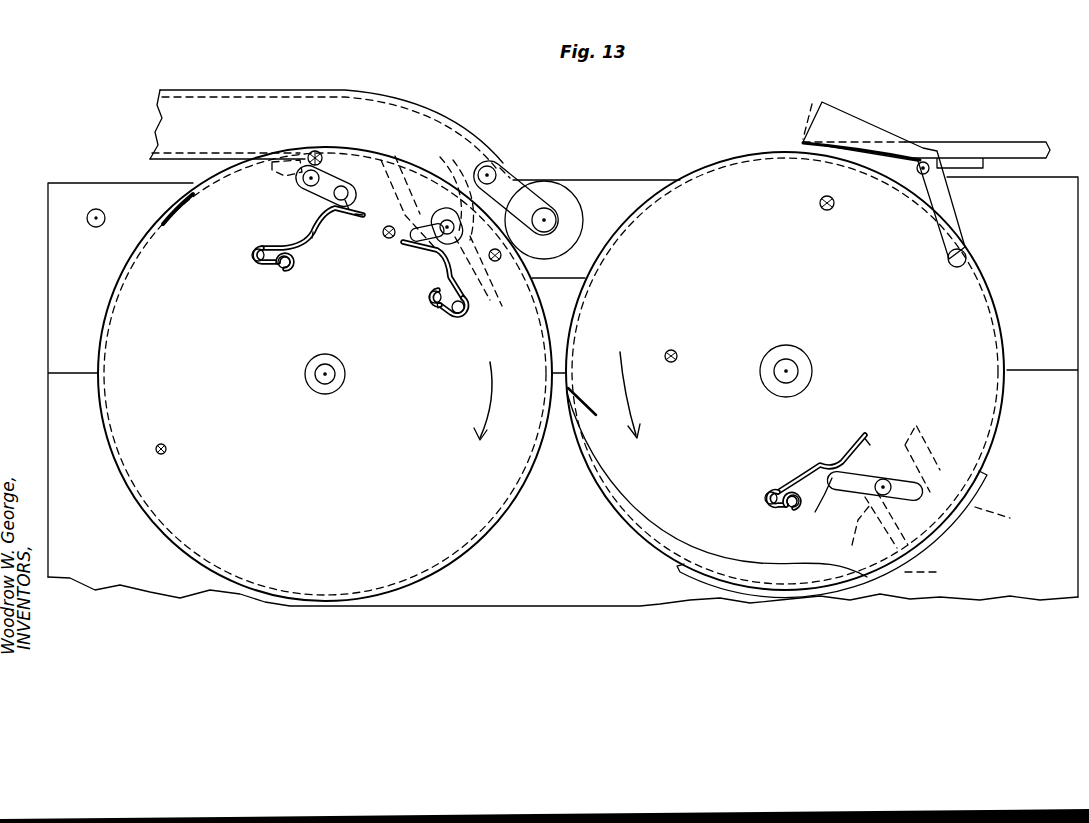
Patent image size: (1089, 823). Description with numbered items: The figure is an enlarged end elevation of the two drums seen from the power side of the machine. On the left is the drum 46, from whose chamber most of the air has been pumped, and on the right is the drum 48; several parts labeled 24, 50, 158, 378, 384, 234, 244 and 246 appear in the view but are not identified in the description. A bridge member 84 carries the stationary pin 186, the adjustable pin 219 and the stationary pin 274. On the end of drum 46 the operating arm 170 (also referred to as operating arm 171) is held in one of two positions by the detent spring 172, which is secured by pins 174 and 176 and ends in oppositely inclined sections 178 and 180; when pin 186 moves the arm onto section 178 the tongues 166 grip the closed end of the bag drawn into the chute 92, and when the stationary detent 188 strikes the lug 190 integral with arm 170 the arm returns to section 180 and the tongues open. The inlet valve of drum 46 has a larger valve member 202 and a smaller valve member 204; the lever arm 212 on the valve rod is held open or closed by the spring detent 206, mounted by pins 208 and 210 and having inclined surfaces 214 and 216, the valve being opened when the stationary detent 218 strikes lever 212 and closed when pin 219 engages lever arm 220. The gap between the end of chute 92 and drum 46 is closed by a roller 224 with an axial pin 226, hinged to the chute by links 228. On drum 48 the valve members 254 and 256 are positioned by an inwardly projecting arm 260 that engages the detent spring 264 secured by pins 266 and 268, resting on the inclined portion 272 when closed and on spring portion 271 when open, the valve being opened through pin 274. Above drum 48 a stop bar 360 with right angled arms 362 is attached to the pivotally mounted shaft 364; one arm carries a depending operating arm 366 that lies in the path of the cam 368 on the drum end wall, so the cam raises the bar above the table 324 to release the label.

The housing 24 is at (48, 405).
The bridge member 84 is at (60, 220).
The drum 46 is at (486, 535).
The left disc hub 50 is at (325, 377).
The pad segment 158 is at (172, 226).
The stationary detent 188 is at (170, 449).
The chute 92 is at (180, 106).
The tongues 166 is at (300, 156).
The stationary pin 186 is at (314, 150).
The operating arm 171 is at (300, 176).
The operating arm 170 is at (345, 186).
The lug 190 is at (335, 200).
The detent spring 172 is at (265, 246).
The inclined section 178 is at (356, 218).
The inclined section 180 is at (309, 228).
The pin 174 is at (252, 262).
The pin 176 is at (280, 270).
The stationary detent 218 is at (386, 240).
The adjustable pin 219 is at (494, 262).
The valve member 202 is at (452, 175).
The lever arm 212 is at (418, 210).
The valve member 204 is at (487, 302).
The lever arm 220 is at (440, 218).
The inclined surface 214 is at (414, 245).
The inclined surface 216 is at (438, 270).
The pin 210 is at (456, 315).
The spring detent 206 is at (430, 302).
The pin 208 is at (438, 310).
The links 228 is at (507, 183).
The roller 224 is at (570, 206).
The axial pin 226 is at (558, 221).
The drum 48 is at (1001, 442).
The right disc hub 384 is at (792, 364).
The pin 378 is at (680, 358).
The stationary pin 274 is at (826, 211).
The table 324 is at (990, 143).
The right angled arms 362 is at (855, 128).
The stop bar 360 is at (838, 104).
The shaft 364 is at (930, 163).
The operating arm 366 is at (946, 258).
The cam 368 is at (650, 512).
The outer band 234 is at (948, 540).
The band portion 244 is at (1008, 517).
The band portion 246 is at (939, 571).
The inwardly projecting arm 260 is at (836, 478).
The spring portion 271 is at (870, 440).
The detent spring 264 is at (770, 490).
The pin 266 is at (765, 503).
The pin 268 is at (790, 510).
The inclined portion 272 is at (818, 512).
The valve member 254 is at (924, 454).
The valve member 256 is at (867, 524).